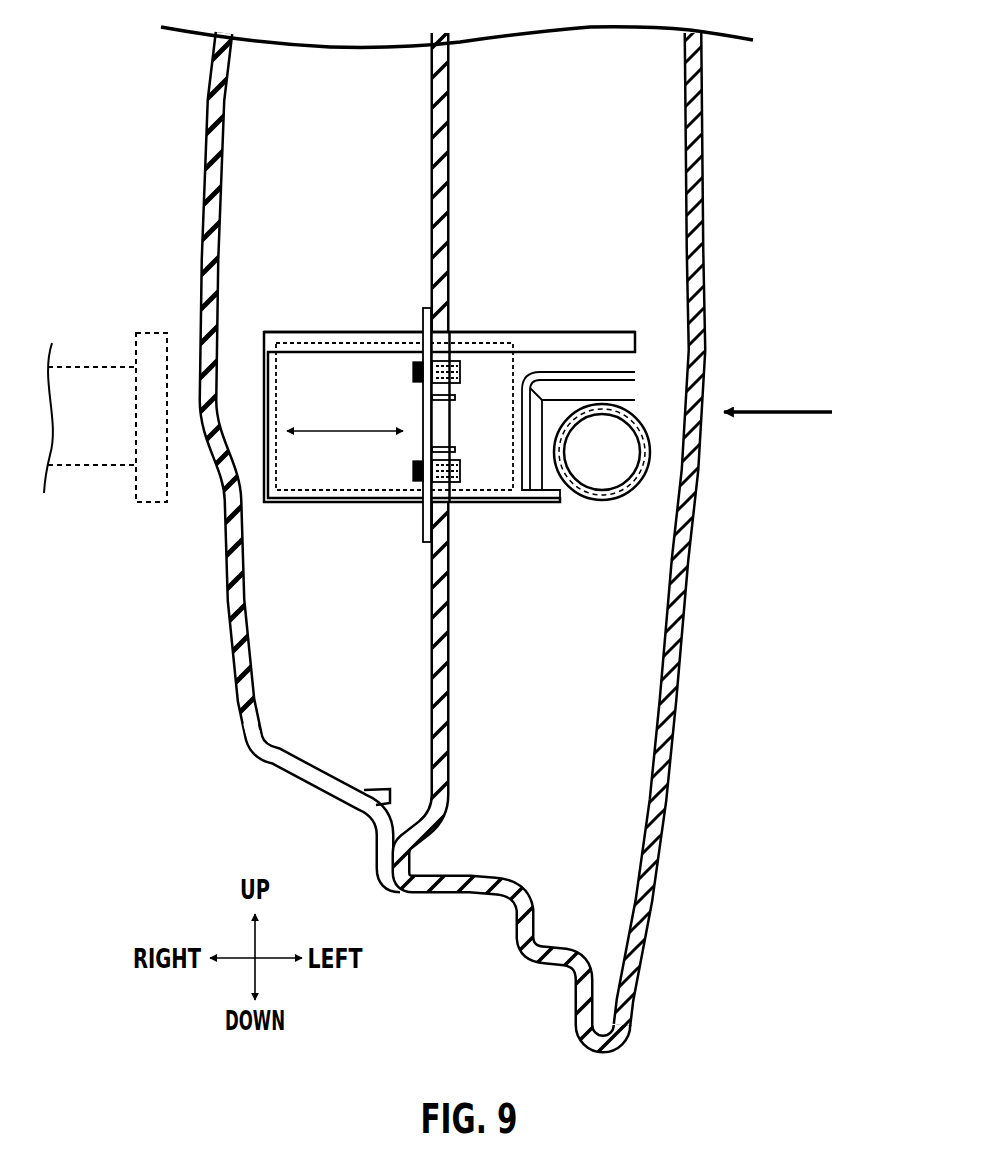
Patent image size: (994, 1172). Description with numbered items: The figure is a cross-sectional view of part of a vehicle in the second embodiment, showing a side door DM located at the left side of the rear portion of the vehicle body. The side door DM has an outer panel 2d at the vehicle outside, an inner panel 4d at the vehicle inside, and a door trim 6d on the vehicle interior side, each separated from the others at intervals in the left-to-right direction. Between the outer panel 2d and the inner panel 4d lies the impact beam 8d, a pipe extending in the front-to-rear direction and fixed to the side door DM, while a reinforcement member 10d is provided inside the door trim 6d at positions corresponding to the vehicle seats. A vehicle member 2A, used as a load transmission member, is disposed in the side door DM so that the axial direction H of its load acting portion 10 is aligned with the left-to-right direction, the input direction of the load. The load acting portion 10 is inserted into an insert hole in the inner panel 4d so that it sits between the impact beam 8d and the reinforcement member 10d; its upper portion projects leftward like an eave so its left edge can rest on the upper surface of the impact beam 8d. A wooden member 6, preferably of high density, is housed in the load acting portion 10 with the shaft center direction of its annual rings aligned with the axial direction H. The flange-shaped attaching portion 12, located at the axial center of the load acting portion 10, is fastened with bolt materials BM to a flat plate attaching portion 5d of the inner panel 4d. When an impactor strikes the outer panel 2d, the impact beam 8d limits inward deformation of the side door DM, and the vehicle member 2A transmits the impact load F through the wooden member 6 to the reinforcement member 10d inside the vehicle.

The side door DM is at (724, 131).
The vehicle member 2A is at (304, 325).
The wooden member 6 is at (359, 337).
The flat plate attaching portion 5d is at (431, 320).
The impact load F is at (792, 405).
The axial direction H is at (320, 430).
The bolt materials BM is at (412, 376).
The reinforcement member 10d is at (92, 448).
The outer panel 2d is at (684, 516).
The impact beam 8d is at (620, 504).
The load acting portion 10 is at (301, 493).
The attaching portion 12 is at (421, 530).
The door trim 6d is at (246, 692).
The inner panel 4d is at (448, 683).